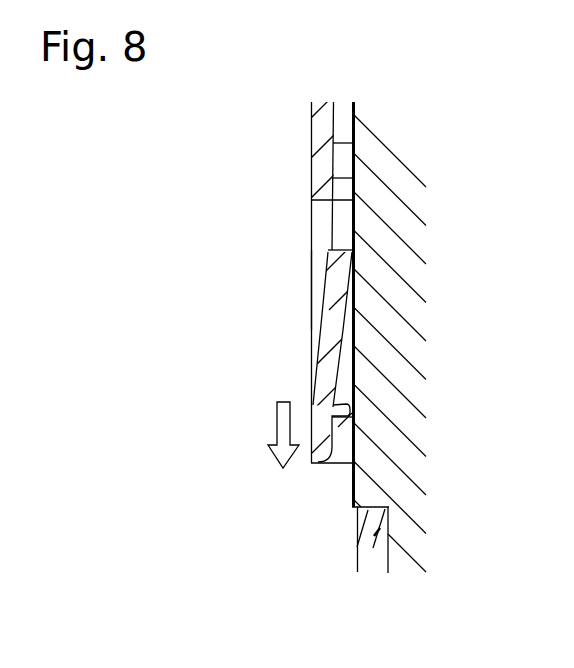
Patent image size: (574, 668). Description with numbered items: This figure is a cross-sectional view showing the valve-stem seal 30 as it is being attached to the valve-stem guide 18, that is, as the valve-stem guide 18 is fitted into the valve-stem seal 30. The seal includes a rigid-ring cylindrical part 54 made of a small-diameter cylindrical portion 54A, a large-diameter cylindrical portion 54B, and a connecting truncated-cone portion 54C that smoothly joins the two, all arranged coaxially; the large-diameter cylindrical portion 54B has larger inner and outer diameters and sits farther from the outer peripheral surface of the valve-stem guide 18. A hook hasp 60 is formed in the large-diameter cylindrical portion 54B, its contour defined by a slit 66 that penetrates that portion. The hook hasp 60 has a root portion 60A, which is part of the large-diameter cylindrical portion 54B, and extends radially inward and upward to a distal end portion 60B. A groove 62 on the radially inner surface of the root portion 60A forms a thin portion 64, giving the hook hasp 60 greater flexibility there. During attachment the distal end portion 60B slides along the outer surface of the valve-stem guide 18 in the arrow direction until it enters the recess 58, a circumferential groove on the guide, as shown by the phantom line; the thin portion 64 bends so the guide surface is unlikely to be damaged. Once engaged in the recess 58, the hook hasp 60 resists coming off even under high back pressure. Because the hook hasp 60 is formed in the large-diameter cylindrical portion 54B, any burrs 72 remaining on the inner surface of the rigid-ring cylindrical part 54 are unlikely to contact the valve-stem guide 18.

The valve-stem guide 18 is at (362, 225).
The valve-stem seal 30 is at (152, 201).
The rigid-ring cylindrical part 54 is at (311, 190).
The small-diameter cylindrical portion 54A is at (318, 125).
The large-diameter cylindrical portion 54B is at (308, 315).
The connecting truncated-cone portion 54C is at (318, 168).
The recess 58 is at (357, 548).
The hook hasp 60 is at (330, 355).
The root portion 60A is at (330, 452).
The distal end portion 60B is at (335, 275).
The groove 62 is at (340, 404).
The thin portion 64 is at (311, 407).
The slit 66 is at (310, 287).
The burr 72 is at (346, 195).